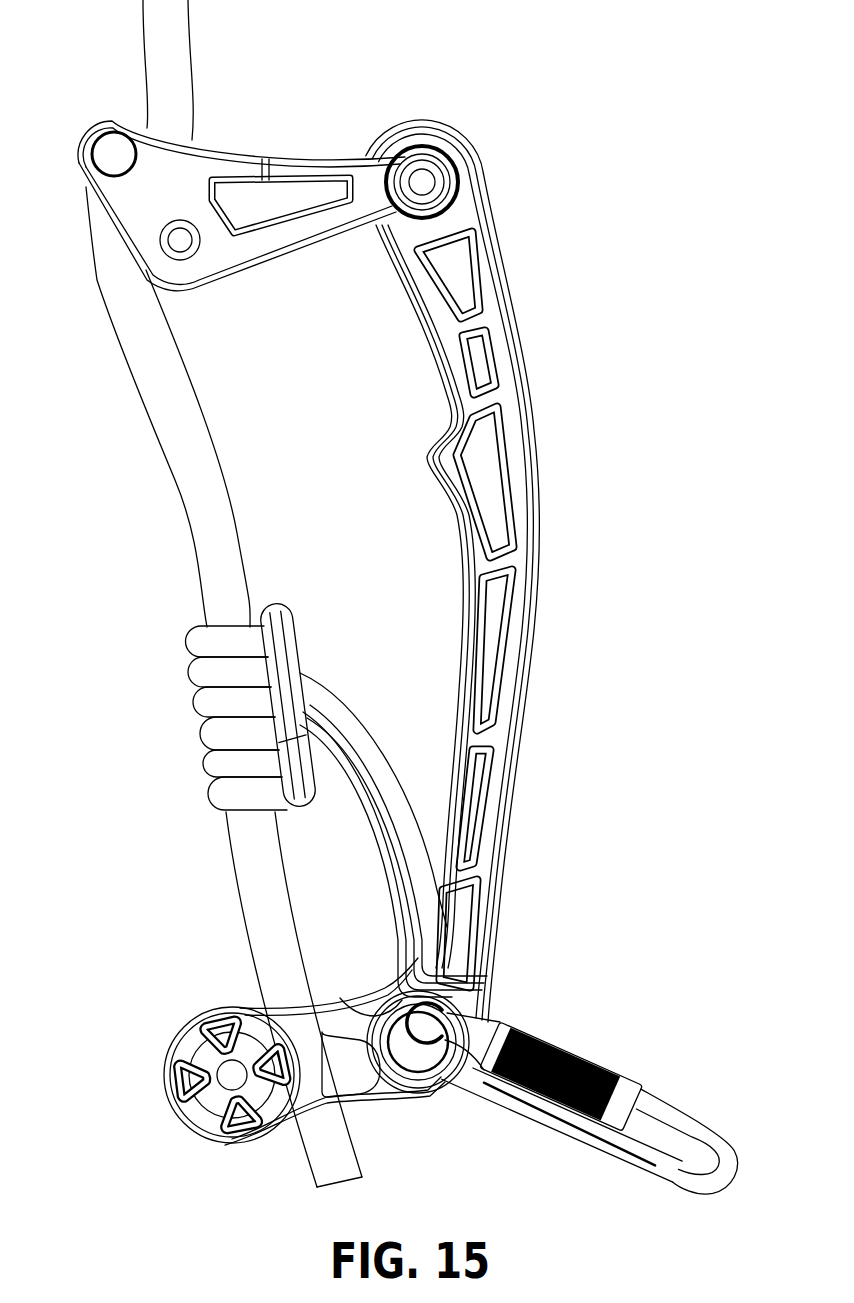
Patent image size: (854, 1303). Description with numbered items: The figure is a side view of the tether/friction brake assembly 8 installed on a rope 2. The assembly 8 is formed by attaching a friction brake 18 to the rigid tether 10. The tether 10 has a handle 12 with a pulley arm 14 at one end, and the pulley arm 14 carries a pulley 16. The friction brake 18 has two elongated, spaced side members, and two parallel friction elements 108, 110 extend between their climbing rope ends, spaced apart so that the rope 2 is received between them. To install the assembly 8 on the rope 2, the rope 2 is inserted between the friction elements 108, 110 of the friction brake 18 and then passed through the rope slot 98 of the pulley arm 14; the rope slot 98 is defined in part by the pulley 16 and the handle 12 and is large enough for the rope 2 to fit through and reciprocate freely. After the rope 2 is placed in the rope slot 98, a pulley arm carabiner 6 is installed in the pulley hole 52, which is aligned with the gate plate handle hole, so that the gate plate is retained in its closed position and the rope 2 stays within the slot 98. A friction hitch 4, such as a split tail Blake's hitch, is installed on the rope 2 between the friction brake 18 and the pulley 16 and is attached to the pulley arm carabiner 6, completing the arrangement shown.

The rope 2 is at (217, 440).
The friction hitch 4 is at (186, 630).
The pulley arm carabiner 6 is at (673, 1103).
The tether/friction brake assembly 8 is at (368, 104).
The rigid tether 10 is at (456, 532).
The handle 12 is at (521, 340).
The pulley arm 14 is at (359, 1111).
The pulley 16 is at (202, 1008).
The friction brake 18 is at (231, 199).
The pulley hole 52 is at (410, 1063).
The rope slot 98 is at (307, 1010).
The friction element 108 is at (110, 148).
The friction element 110 is at (183, 246).